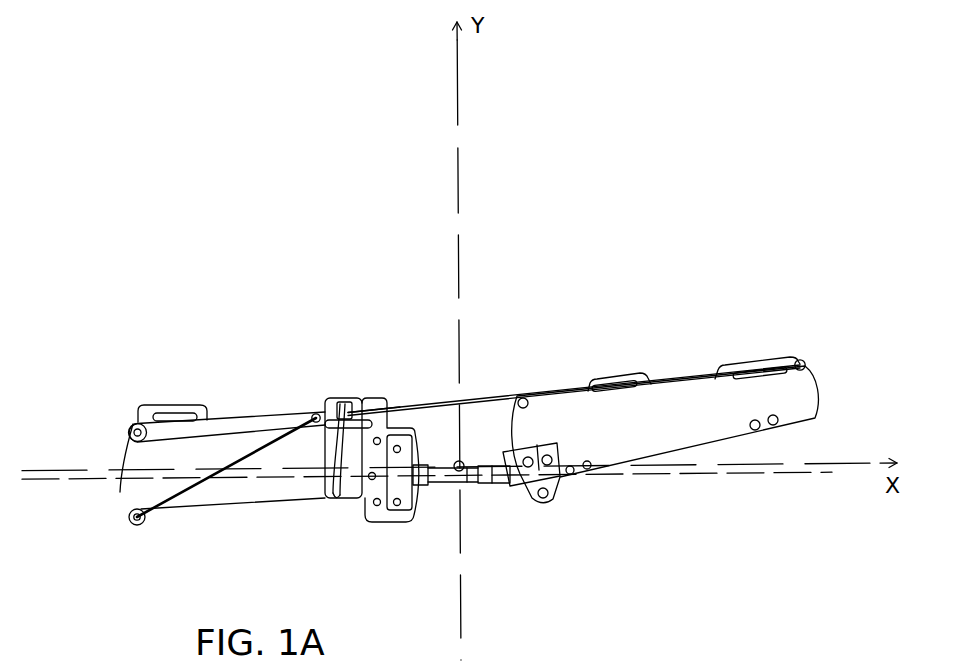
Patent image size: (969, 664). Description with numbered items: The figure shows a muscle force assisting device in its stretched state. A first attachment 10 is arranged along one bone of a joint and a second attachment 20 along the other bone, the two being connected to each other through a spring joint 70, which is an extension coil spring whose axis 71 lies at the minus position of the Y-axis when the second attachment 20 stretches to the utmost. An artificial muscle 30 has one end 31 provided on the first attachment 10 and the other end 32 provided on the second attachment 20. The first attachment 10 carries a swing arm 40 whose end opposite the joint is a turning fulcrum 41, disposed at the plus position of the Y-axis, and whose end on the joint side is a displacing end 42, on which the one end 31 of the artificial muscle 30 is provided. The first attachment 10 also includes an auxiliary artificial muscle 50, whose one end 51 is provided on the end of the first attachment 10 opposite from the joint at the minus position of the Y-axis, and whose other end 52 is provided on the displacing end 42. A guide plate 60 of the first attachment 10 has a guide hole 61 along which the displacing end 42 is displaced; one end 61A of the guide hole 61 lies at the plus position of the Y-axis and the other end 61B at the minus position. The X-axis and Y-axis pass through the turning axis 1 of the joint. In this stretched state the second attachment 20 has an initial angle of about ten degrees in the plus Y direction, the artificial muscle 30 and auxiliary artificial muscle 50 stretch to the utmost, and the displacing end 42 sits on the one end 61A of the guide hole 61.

The turning axis 1 is at (463, 483).
The first attachment 10 is at (128, 489).
The second attachment 20 is at (710, 422).
The artificial muscle 30 is at (480, 398).
The one end 31 is at (352, 410).
The other end 32 is at (804, 361).
The swing arm 40 is at (232, 415).
The turning fulcrum 41 is at (133, 426).
The displacing end 42 is at (333, 400).
The auxiliary artificial muscle 50 is at (205, 467).
The one end 51 is at (141, 525).
The other end 52 is at (311, 414).
The guide plate 60 is at (343, 508).
The guide hole 61 is at (323, 475).
The one end 61A is at (343, 402).
The other end 61B is at (333, 502).
The spring joint 70 is at (427, 487).
The axis 71 is at (481, 478).